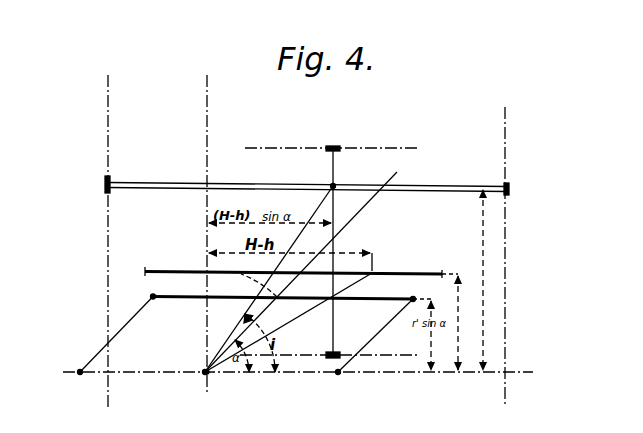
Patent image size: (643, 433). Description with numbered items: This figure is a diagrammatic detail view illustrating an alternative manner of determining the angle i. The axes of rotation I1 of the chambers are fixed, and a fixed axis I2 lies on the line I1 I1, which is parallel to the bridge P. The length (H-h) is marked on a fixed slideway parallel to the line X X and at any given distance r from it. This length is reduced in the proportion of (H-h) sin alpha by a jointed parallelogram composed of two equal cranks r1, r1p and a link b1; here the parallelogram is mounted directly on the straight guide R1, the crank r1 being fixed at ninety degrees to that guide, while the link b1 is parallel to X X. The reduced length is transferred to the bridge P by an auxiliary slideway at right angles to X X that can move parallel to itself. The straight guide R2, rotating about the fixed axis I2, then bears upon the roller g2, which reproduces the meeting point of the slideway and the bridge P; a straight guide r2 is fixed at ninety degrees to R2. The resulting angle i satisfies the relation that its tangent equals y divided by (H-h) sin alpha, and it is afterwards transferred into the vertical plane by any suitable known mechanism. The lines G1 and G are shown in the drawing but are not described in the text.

The left guide line G1 is at (109, 150).
The right guide line G is at (505, 121).
The bridge P is at (275, 184).
The straight guide R2 is at (339, 182).
The straight guide R1 is at (399, 172).
The roller g2 is at (344, 198).
The straight guide r2 is at (377, 270).
The link b1 is at (196, 296).
The crank r1p is at (127, 316).
The crank r1 is at (254, 320).
The axis of rotation I1 is at (198, 383).
The fixed axis I2 is at (216, 382).
The line X X is at (297, 375).
The distance y is at (490, 280).
The distance r is at (459, 322).